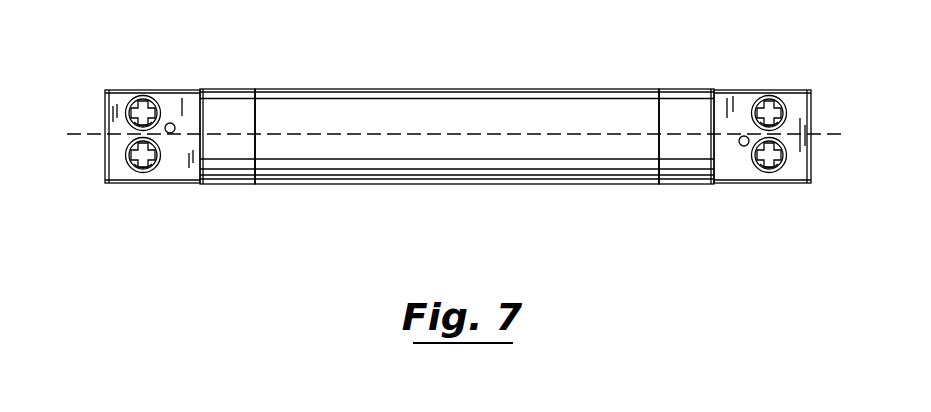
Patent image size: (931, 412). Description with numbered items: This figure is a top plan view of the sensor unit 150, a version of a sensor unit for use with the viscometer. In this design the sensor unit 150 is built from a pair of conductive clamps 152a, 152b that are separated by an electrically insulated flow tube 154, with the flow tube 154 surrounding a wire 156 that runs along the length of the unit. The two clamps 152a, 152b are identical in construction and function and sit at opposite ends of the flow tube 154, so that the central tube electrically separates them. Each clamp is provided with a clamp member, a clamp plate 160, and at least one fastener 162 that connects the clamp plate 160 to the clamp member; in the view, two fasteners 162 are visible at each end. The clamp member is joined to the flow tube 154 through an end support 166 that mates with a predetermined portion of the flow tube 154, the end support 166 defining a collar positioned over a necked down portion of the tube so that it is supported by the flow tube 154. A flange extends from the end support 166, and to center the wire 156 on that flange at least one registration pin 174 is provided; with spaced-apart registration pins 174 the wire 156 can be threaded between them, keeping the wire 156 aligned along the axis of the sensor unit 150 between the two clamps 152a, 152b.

The sensor unit 150 is at (446, 130).
The clamp 152a is at (132, 85).
The clamp 152b is at (782, 85).
The flow tube 154 is at (490, 188).
The wire 156 is at (93, 142).
The clamp plate 160 is at (220, 105).
The fastener 162 is at (120, 110).
The end support 166 is at (227, 184).
The registration pin 174 is at (180, 128).